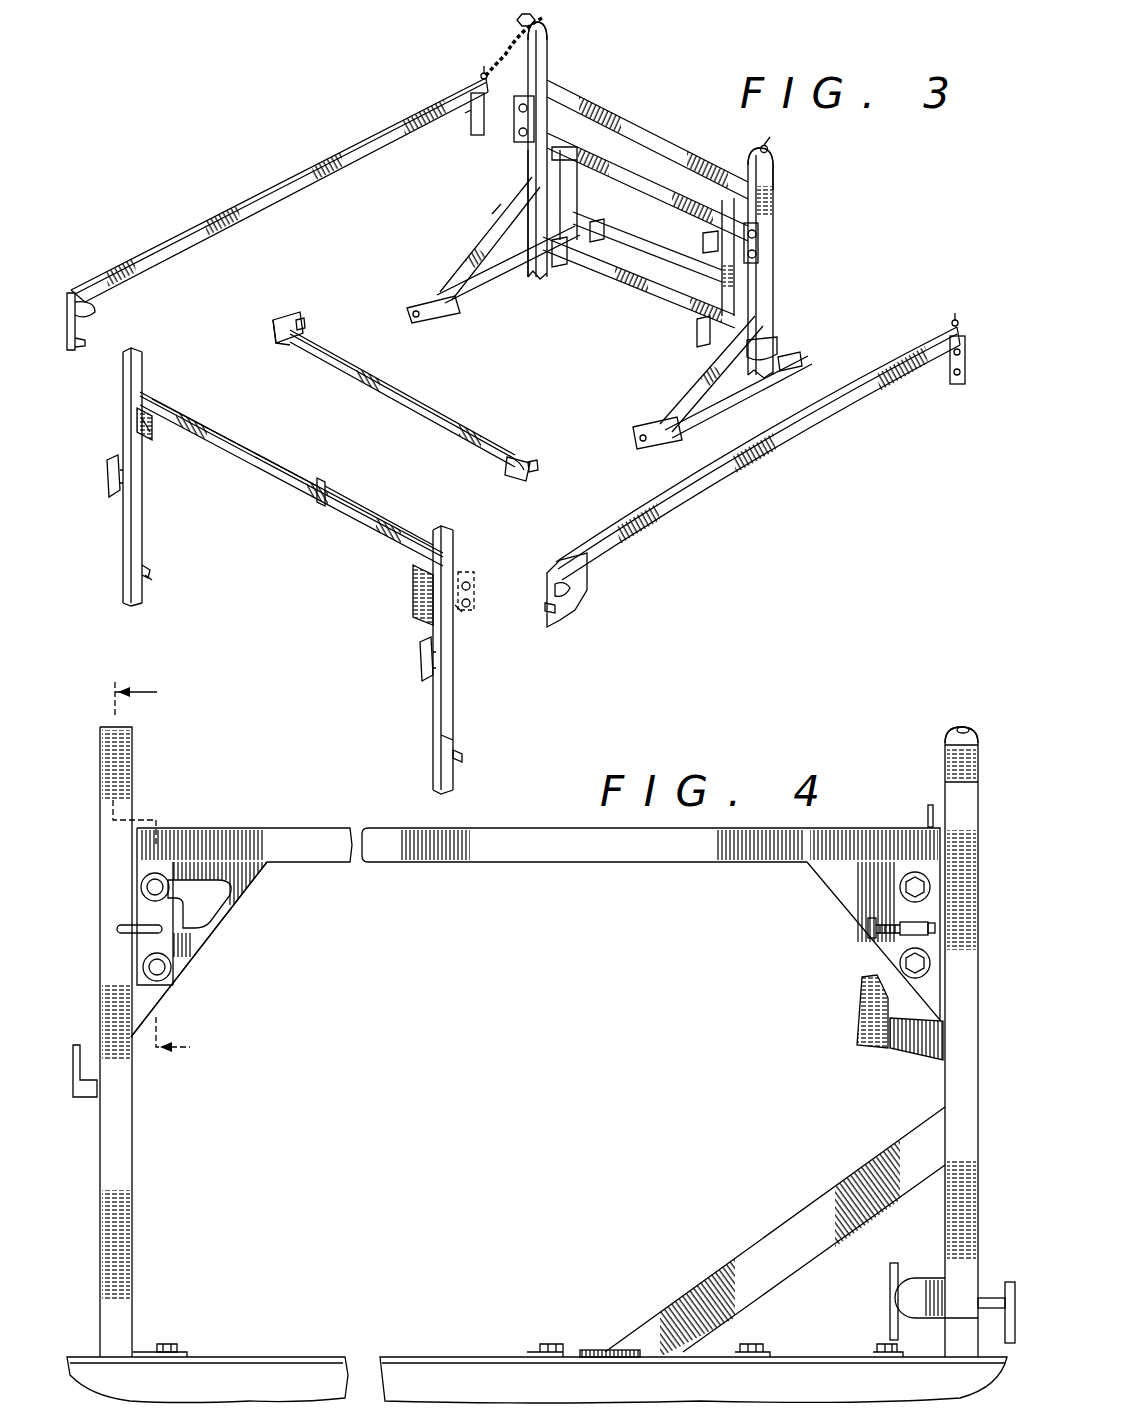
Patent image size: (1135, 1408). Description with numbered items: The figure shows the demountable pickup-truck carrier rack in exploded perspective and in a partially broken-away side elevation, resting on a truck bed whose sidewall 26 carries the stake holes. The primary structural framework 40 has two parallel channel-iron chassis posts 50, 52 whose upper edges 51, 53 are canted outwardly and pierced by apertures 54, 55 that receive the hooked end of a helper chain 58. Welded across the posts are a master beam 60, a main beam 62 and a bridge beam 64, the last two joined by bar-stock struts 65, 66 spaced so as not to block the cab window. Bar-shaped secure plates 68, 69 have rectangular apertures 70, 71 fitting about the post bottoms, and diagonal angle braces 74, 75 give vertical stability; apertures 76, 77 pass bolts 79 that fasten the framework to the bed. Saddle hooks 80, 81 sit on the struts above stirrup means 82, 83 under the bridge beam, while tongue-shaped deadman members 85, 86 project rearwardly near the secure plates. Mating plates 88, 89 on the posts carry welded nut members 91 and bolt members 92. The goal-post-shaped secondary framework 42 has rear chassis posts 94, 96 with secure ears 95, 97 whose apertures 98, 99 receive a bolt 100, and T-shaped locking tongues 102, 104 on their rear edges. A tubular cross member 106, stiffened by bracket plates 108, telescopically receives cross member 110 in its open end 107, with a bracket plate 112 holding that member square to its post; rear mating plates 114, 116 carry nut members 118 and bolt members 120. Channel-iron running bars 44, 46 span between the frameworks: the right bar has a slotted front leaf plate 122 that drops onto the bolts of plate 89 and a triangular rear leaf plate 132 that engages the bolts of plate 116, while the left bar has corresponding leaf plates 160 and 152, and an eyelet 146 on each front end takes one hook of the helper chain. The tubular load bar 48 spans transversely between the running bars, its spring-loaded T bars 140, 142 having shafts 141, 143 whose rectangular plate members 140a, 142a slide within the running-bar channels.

In FIG. 4, the sidewall 26 is at (428, 1368).
In FIG. 3, the primary structural framework 40 is at (649, 130).
In FIG. 4, the primary structural framework 40 is at (943, 791).
In FIG. 3, the secondary framework 42 is at (284, 456).
In FIG. 4, the secondary framework 42 is at (176, 829).
In FIG. 3, the running bar 44 is at (281, 184).
In FIG. 3, the running bar 46 is at (768, 454).
In FIG. 4, the running bar 46 is at (477, 864).
In FIG. 3, the load bar 48 is at (432, 394).
In FIG. 3, the chassis post 50 is at (548, 72).
In FIG. 3, the upper edge 51 is at (549, 32).
In FIG. 3, the chassis post 52 is at (774, 283).
In FIG. 4, the chassis post 52 is at (945, 1090).
In FIG. 3, the upper edge 53 is at (775, 165).
In FIG. 4, the upper edge 53 is at (950, 745).
In FIG. 3, the aperture 54 is at (536, 20).
In FIG. 3, the aperture 55 is at (773, 150).
In FIG. 4, the aperture 55 is at (963, 726).
In FIG. 3, the helper chain 58 is at (505, 34).
In FIG. 3, the master beam 60 is at (612, 112).
In FIG. 3, the main beam 62 is at (662, 190).
In FIG. 3, the bridge beam 64 is at (657, 283).
In FIG. 3, the strut 65 is at (571, 193).
In FIG. 3, the strut 66 is at (722, 273).
In FIG. 3, the secure plate 68 is at (432, 302).
In FIG. 3, the secure plate 69 is at (662, 428).
In FIG. 4, the secure plate 69 is at (598, 1349).
In FIG. 3, the rectangular aperture 70 is at (560, 265).
In FIG. 3, the rectangular aperture 71 is at (790, 364).
In FIG. 3, the angle brace 74 is at (478, 228).
In FIG. 3, the angle brace 75 is at (710, 368).
In FIG. 4, the angle brace 75 is at (745, 1256).
In FIG. 3, the apertures 76 is at (430, 312).
In FIG. 3, the apertures 77 is at (670, 436).
In FIG. 4, the bolt 79 is at (545, 1345).
In FIG. 3, the saddle hook 80 is at (527, 165).
In FIG. 3, the saddle hook 81 is at (703, 242).
In FIG. 4, the saddle hook 81 is at (866, 1021).
In FIG. 3, the stirrup means 82 is at (606, 228).
In FIG. 3, the stirrup means 83 is at (697, 330).
In FIG. 4, the stirrup means 83 is at (889, 1280).
In FIG. 3, the deadman member 85 is at (493, 208).
In FIG. 3, the deadman member 86 is at (778, 350).
In FIG. 4, the deadman member 86 is at (930, 1280).
In FIG. 3, the mating plate 88 is at (522, 98).
In FIG. 3, the mating plate 89 is at (760, 226).
In FIG. 3, the nut member 91 is at (517, 137).
In FIG. 3, the bolt member 92 is at (758, 256).
In FIG. 4, the bolt member 92 is at (930, 886).
In FIG. 3, the chassis post 94 is at (143, 512).
In FIG. 3, the secure ear 95 is at (152, 578).
In FIG. 3, the chassis post 96 is at (454, 690).
In FIG. 4, the chassis post 96 is at (125, 1133).
In FIG. 3, the secure ear 97 is at (462, 756).
In FIG. 4, the secure ear 97 is at (150, 1348).
In FIG. 3, the aperture 98 is at (150, 568).
In FIG. 3, the aperture 99 is at (456, 745).
In FIG. 4, the bolt 100 is at (180, 1350).
In FIG. 3, the locking tongue 102 is at (106, 464).
In FIG. 3, the locking tongue 104 is at (418, 657).
In FIG. 4, the locking tongue 104 is at (90, 1068).
In FIG. 3, the cross member 106 is at (216, 426).
In FIG. 3, the open end 107 is at (330, 498).
In FIG. 3, the bracket plate 108 is at (134, 416).
In FIG. 3, the cross member 110 is at (393, 528).
In FIG. 3, the bracket plate 112 is at (420, 582).
In FIG. 3, the rear mating plate 114 is at (148, 434).
In FIG. 3, the rear mating plate 116 is at (460, 612).
In FIG. 4, the rear mating plate 116 is at (147, 995).
In FIG. 3, the nut member 118 is at (472, 570).
In FIG. 3, the bolt member 120 is at (471, 603).
In FIG. 4, the bolt member 120 is at (146, 887).
In FIG. 3, the front leaf plate 122 is at (953, 384).
In FIG. 4, the front leaf plate 122 is at (860, 905).
In FIG. 3, the rear leaf plate 132 is at (580, 580).
In FIG. 4, the rear leaf plate 132 is at (248, 880).
In FIG. 3, the T bar 140 is at (292, 326).
In FIG. 3, the rectangular plate member 140a is at (273, 329).
In FIG. 3, the shaft portion 141 is at (305, 326).
In FIG. 3, the T bar 142 is at (522, 480).
In FIG. 3, the rectangular plate member 142a is at (538, 464).
In FIG. 3, the shaft portion 143 is at (522, 466).
In FIG. 3, the eyelet 146 is at (478, 72).
In FIG. 4, the eyelet 146 is at (927, 812).
In FIG. 3, the leaf plate 152 is at (100, 310).
In FIG. 3, the front leaf plate 160 is at (470, 118).